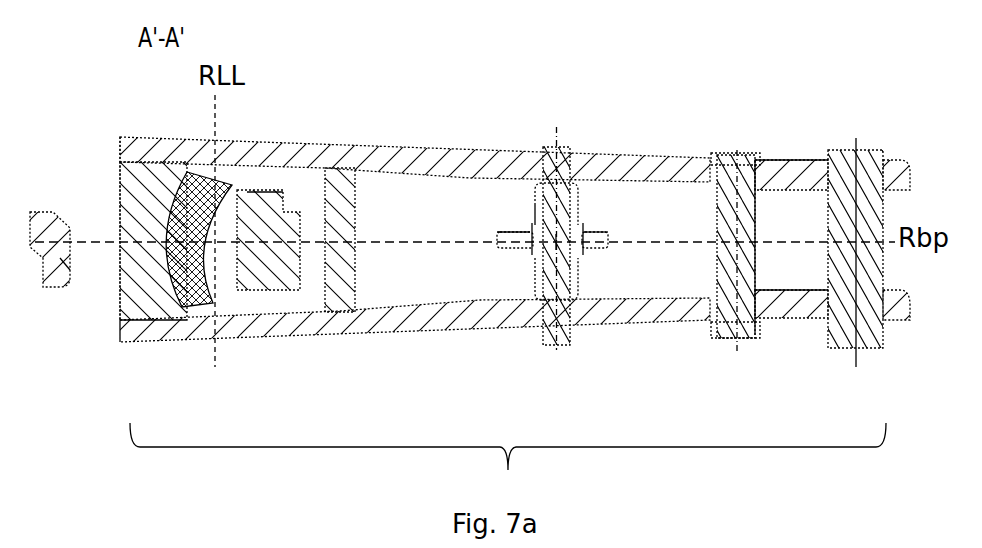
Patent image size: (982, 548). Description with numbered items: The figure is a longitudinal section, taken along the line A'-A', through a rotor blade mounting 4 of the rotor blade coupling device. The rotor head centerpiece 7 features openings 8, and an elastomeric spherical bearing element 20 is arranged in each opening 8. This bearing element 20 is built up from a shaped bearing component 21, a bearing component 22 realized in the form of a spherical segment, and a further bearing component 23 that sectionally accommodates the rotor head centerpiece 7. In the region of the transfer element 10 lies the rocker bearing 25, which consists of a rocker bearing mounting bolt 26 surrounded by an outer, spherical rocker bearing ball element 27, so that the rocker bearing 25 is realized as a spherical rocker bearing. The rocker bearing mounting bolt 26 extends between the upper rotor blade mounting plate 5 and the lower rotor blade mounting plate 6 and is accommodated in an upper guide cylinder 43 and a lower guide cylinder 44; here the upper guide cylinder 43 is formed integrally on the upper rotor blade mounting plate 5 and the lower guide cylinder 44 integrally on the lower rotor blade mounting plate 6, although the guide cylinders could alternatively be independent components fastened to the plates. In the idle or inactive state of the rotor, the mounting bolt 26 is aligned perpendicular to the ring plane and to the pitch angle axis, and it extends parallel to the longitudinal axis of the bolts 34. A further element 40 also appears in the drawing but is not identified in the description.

The rotor blade mounting 4 is at (508, 459).
The upper rotor blade mounting plate 5 is at (389, 166).
The lower rotor blade mounting plate 6 is at (388, 322).
The rotor head centerpiece 7 is at (255, 252).
The openings 8 is at (98, 243).
The transfer element 10 is at (492, 252).
The elastomeric spherical bearing element 20 is at (114, 168).
The shaped bearing component 21 is at (155, 192).
The bearing component realized in the form of a spherical segment 22 is at (205, 196).
The bearing component that sectionally accommodates the rotor head centerpiece 23 is at (256, 200).
The rocker bearing 25 is at (528, 213).
The rocker bearing mounting bolt 26 is at (553, 175).
The rocker bearing ball element 27 is at (567, 243).
The bolts 34 is at (860, 320).
The pin 40 is at (585, 227).
The upper guide cylinder 43 is at (542, 192).
The lower guide cylinder 44 is at (542, 292).